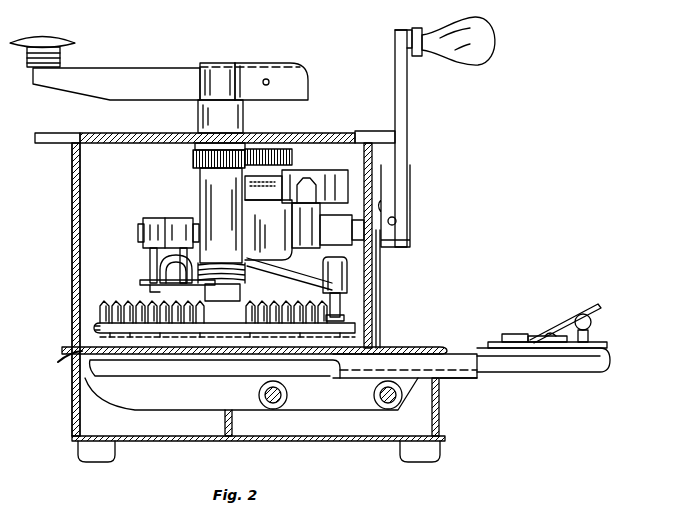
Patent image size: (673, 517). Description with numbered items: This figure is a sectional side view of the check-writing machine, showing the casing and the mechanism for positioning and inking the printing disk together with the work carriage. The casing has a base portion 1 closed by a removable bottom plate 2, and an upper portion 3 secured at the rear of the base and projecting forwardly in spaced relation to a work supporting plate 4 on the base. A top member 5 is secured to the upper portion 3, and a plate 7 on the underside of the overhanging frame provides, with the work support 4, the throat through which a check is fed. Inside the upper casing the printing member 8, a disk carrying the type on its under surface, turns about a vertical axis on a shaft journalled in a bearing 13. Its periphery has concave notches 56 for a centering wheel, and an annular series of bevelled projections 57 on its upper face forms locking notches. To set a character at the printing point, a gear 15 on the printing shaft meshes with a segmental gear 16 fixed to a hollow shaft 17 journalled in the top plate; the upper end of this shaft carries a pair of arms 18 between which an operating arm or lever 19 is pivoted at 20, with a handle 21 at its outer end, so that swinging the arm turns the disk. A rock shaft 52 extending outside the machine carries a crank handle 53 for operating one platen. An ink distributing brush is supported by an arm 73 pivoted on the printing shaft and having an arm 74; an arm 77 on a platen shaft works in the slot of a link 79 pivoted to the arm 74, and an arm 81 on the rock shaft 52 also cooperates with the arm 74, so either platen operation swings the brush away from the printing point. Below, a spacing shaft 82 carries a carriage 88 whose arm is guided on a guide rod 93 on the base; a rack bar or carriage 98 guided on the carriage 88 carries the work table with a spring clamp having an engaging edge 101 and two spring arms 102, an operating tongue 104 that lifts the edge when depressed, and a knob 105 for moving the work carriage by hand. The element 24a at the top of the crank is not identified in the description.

The base portion 1 is at (72, 410).
The removable bottom plate 2 is at (362, 441).
The upper portion 3 is at (72, 250).
The work supporting plate 4 is at (405, 350).
The top member 5 is at (326, 131).
The plate 7 is at (357, 345).
The printing member 8 is at (105, 322).
The bearing 13 is at (200, 170).
The gear 15 is at (200, 158).
The segmental gear 16 is at (293, 157).
The shaft 17 is at (222, 64).
The pair of arms 18 is at (307, 72).
The operating arm or lever 19 is at (148, 67).
The pivot 20 is at (267, 80).
The handle 21 is at (72, 42).
The crank 24a is at (385, 123).
The rock shaft 52 is at (382, 258).
The crank handle 53 is at (499, 42).
The concave notches 56 is at (115, 330).
The projections 57 is at (127, 305).
The arm 73 is at (258, 290).
The arm 74 is at (165, 285).
The arm 77 is at (146, 222).
The link 79 is at (150, 280).
The arm 81 is at (178, 220).
The shaft 82 is at (394, 400).
The carriage 88 is at (467, 380).
The guide rod 93 is at (260, 405).
The rack bar or carriage 98 is at (527, 372).
The engaging edge 101 is at (500, 342).
The spring arms 102 is at (524, 334).
The operating tongue 104 is at (597, 306).
The handle or knob 105 is at (596, 321).